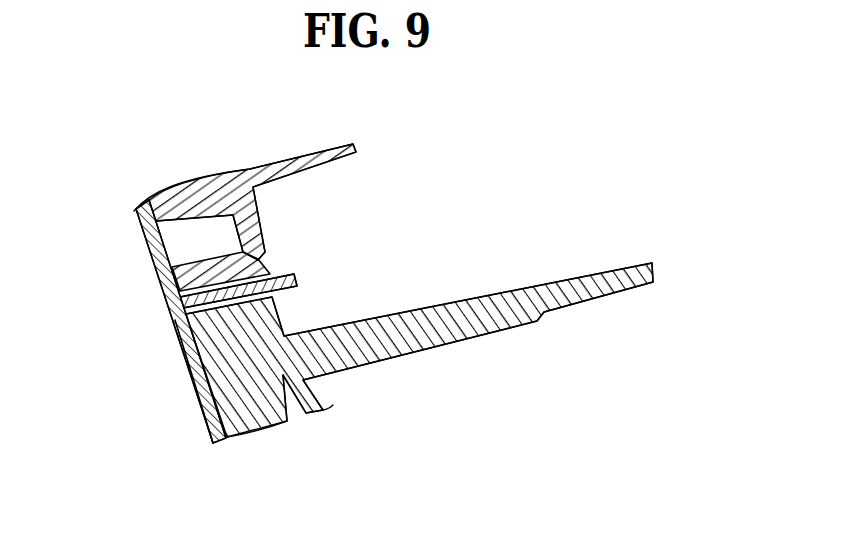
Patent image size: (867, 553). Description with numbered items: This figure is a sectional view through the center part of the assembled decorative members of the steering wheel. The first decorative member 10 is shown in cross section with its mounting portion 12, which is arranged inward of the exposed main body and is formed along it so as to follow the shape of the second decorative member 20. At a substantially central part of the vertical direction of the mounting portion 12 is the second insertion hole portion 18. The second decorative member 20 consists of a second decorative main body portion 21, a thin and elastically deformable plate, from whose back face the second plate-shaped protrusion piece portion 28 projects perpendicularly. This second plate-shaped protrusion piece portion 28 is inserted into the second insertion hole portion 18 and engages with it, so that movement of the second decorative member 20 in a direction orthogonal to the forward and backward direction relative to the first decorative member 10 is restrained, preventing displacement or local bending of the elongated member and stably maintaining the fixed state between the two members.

The first decorative member 10 is at (208, 173).
The mounting portion 12 is at (273, 316).
The second insertion hole portion 18 is at (210, 282).
The second decorative member 20 is at (152, 257).
The second decorative main body portion 21 is at (198, 383).
The second plate-shaped protrusion piece portion 28 is at (296, 282).